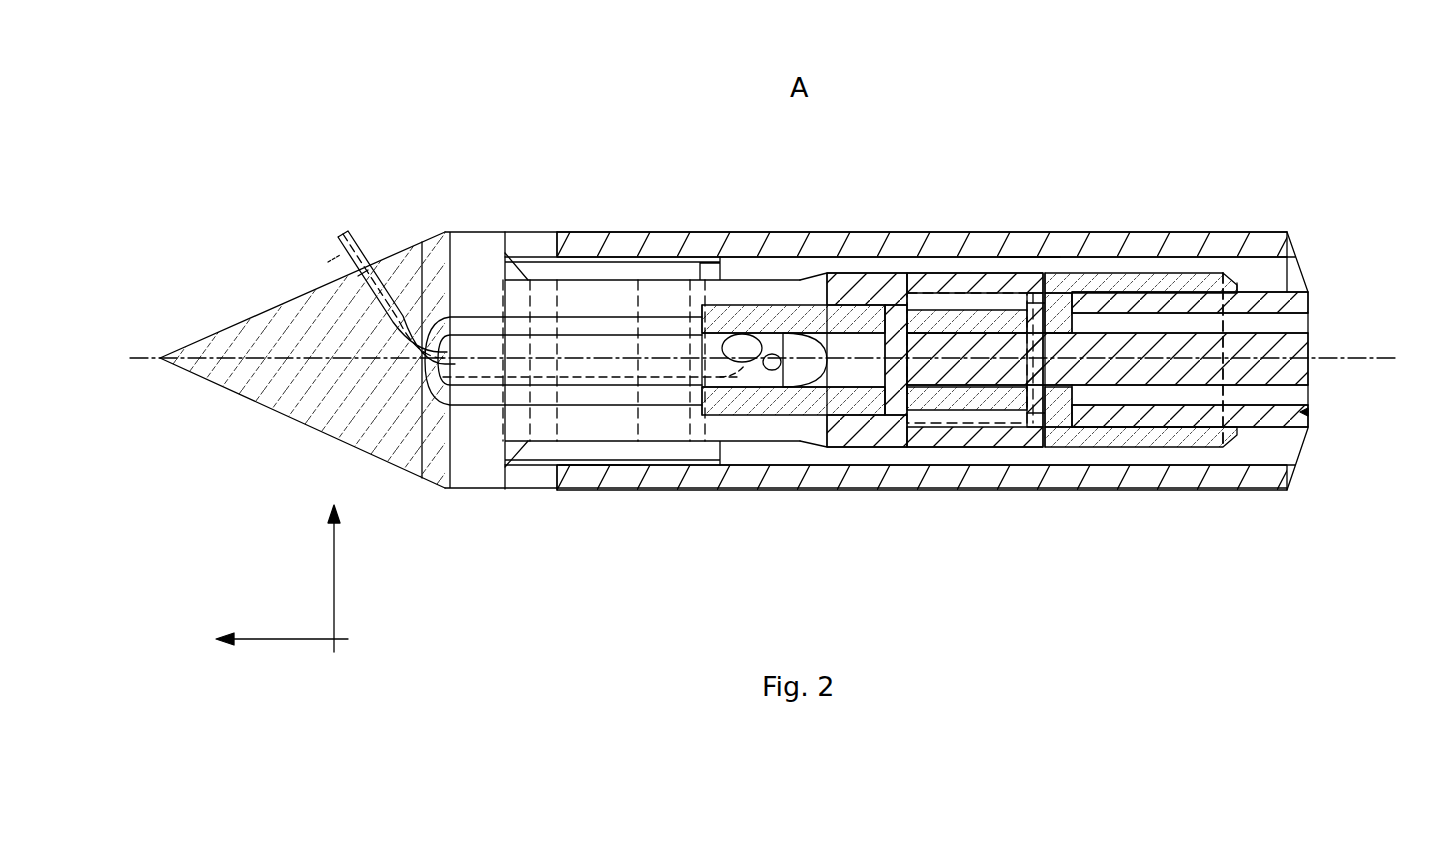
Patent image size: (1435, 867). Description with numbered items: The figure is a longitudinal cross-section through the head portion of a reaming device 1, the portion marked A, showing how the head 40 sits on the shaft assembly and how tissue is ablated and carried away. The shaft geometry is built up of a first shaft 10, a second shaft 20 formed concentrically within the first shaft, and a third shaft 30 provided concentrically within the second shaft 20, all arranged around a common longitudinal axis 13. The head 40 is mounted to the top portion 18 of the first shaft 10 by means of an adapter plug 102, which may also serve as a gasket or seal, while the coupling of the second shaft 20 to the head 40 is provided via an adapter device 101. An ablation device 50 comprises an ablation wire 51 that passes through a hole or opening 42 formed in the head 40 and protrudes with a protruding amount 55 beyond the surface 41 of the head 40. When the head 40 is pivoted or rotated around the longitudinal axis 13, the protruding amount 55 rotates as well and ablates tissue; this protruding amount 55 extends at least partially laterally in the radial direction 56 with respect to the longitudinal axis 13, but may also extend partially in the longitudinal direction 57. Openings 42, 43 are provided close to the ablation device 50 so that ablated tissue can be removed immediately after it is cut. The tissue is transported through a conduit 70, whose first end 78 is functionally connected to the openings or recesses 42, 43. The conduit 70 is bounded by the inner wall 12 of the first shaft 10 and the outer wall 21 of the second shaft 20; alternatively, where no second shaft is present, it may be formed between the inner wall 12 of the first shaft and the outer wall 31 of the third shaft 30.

The reaming device 1 is at (947, 108).
The first shaft 10 is at (1098, 240).
The inner wall of the first shaft 12 is at (1003, 258).
The longitudinal axis 13 is at (145, 356).
The top portion of the first shaft 18 is at (585, 480).
The second shaft 20 is at (1312, 298).
The outer wall of the second shaft 21 is at (1290, 275).
The third shaft 30 is at (1300, 373).
The outer wall of the third shaft 31 is at (1315, 325).
The head 40 is at (300, 290).
The surface of the head 41 is at (400, 246).
The opening 42 is at (370, 262).
The opening 43 is at (497, 245).
The ablation device 50 is at (346, 233).
The ablation wire 51 is at (475, 395).
The protruding amount 55 is at (330, 258).
The radial direction 56 is at (336, 576).
The longitudinal direction 57 is at (290, 645).
The conduit 70 is at (1250, 268).
The first end of the conduit 78 is at (738, 270).
The adapter device 101 is at (1060, 447).
The adapter plug 102 is at (520, 492).